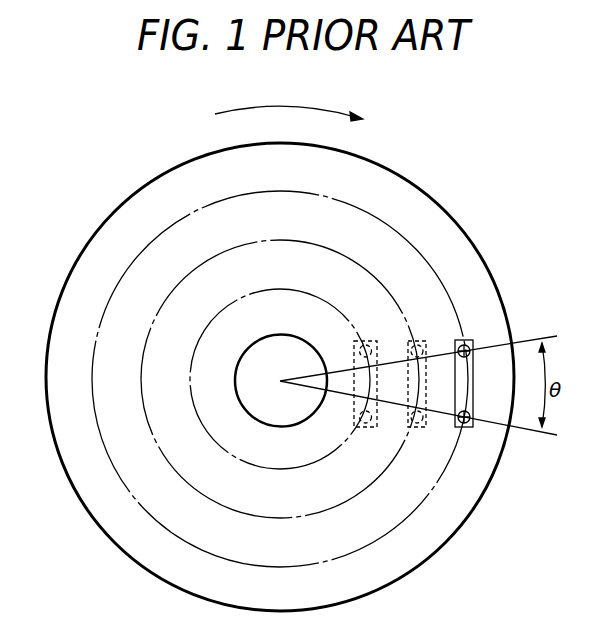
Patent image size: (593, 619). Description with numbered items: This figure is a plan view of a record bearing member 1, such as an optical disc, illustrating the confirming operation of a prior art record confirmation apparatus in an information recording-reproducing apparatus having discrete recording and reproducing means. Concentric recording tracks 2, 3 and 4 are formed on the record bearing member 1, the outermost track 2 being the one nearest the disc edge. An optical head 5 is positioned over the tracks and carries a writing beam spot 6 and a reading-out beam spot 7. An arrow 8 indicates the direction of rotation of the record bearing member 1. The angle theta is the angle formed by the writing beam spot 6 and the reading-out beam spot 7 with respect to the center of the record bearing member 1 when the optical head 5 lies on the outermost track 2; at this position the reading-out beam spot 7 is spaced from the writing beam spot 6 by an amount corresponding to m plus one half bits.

The record bearing member 1 is at (408, 575).
The outermost recording track 2 is at (390, 532).
The recording track 3 is at (369, 490).
The recording track 4 is at (333, 455).
The optical head 5 is at (466, 341).
The writing beam spot 6 is at (470, 353).
The reading-out beam spot 7 is at (470, 415).
The direction of rotation 8 is at (325, 110).